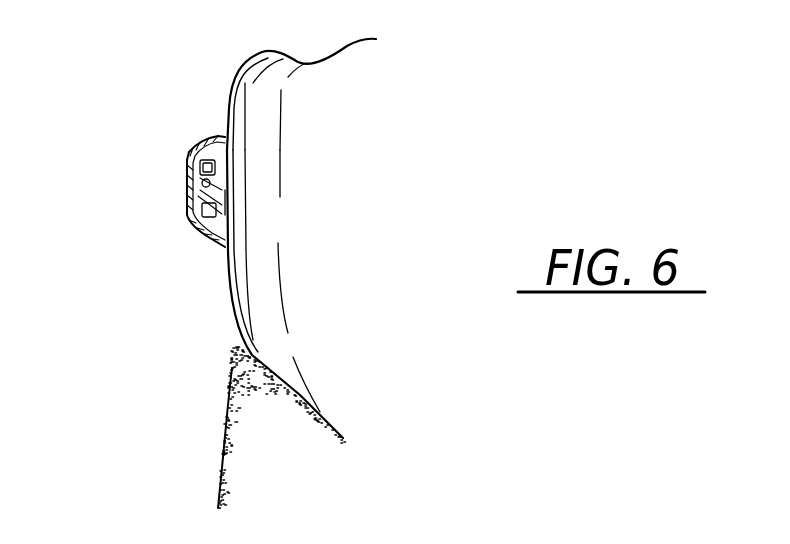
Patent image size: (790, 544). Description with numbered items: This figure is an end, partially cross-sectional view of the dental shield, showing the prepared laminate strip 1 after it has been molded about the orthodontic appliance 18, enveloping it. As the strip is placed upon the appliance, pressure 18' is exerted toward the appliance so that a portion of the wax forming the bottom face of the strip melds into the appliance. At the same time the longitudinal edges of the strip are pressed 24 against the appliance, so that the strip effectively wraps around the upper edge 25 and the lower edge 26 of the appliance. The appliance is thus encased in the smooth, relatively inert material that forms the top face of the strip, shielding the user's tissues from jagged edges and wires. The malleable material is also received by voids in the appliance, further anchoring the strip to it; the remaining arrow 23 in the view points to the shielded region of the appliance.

The laminate strip 1 is at (192, 203).
The orthodontic appliance 18 is at (292, 147).
The pressure 18' is at (136, 191).
The tube envelope 23 is at (178, 78).
The pressing of longitudinal edge 24 is at (170, 252).
The upper edge of the appliance 25 is at (216, 55).
The lower edge of the appliance 26 is at (205, 268).